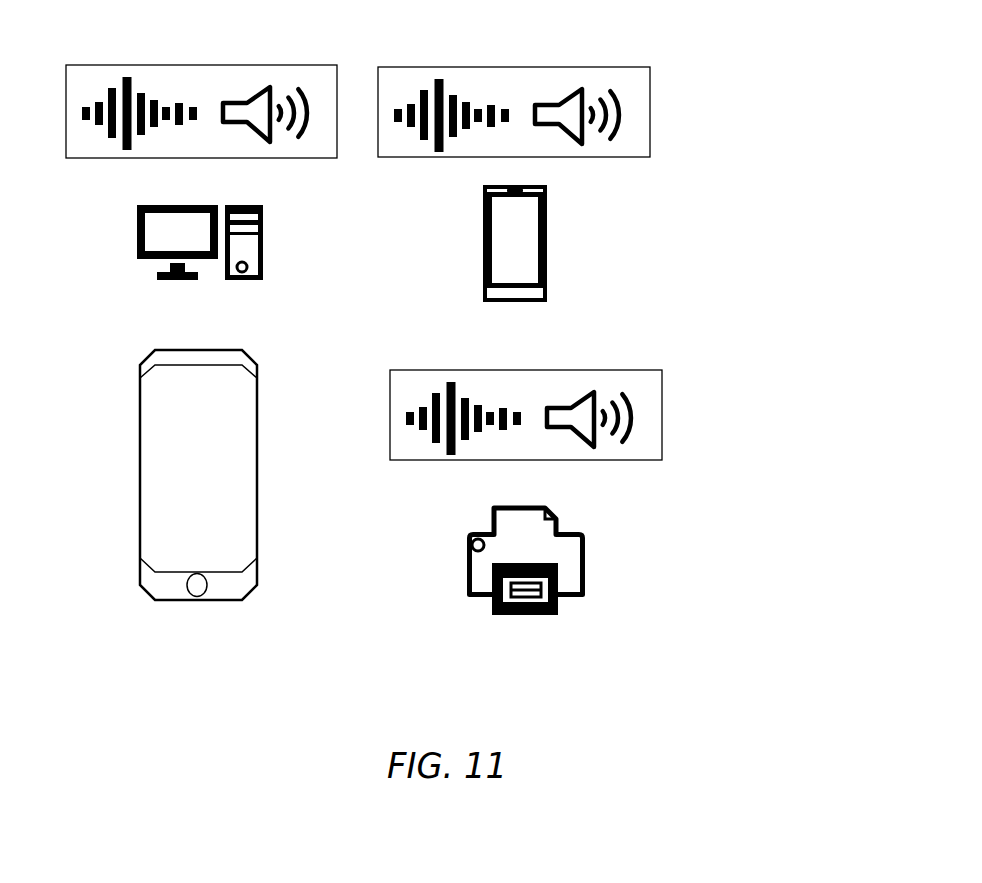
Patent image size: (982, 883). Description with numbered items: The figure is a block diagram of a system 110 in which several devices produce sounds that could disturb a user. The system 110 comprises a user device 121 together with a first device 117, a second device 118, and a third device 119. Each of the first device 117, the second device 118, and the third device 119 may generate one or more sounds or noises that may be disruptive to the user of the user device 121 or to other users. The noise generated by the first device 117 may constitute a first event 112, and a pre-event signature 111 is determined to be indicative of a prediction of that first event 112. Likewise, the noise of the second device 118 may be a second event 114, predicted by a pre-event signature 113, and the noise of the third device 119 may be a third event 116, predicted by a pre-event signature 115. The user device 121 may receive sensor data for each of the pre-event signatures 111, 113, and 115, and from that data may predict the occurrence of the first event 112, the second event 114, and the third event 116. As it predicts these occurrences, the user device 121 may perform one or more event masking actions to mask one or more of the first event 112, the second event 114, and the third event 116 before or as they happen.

The system 110 is at (737, 578).
The pre-event signature 111 is at (125, 82).
The first event 112 is at (245, 102).
The pre-event signature 113 is at (438, 77).
The second event 114 is at (573, 88).
The pre-event signature 115 is at (452, 383).
The third event 116 is at (590, 395).
The first device 117 is at (258, 245).
The second device 118 is at (548, 243).
The third device 119 is at (578, 570).
The user device 121 is at (140, 460).